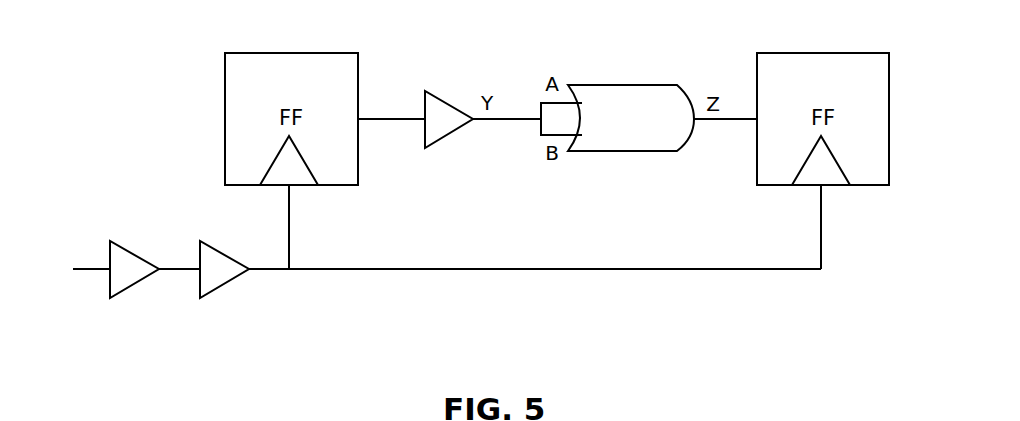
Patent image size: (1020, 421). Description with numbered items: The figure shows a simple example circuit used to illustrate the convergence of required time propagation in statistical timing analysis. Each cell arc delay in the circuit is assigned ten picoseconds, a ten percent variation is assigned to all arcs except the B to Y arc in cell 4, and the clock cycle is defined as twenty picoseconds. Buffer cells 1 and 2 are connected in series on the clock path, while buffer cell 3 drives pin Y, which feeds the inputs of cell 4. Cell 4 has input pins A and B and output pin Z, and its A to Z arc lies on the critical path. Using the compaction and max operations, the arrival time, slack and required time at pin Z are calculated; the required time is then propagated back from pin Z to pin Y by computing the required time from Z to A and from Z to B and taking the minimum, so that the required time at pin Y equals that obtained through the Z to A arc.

The buffer cell 1 is at (134, 269).
The buffer cell 2 is at (224, 269).
The buffer cell 3 is at (449, 119).
The cell 4 is at (617, 118).